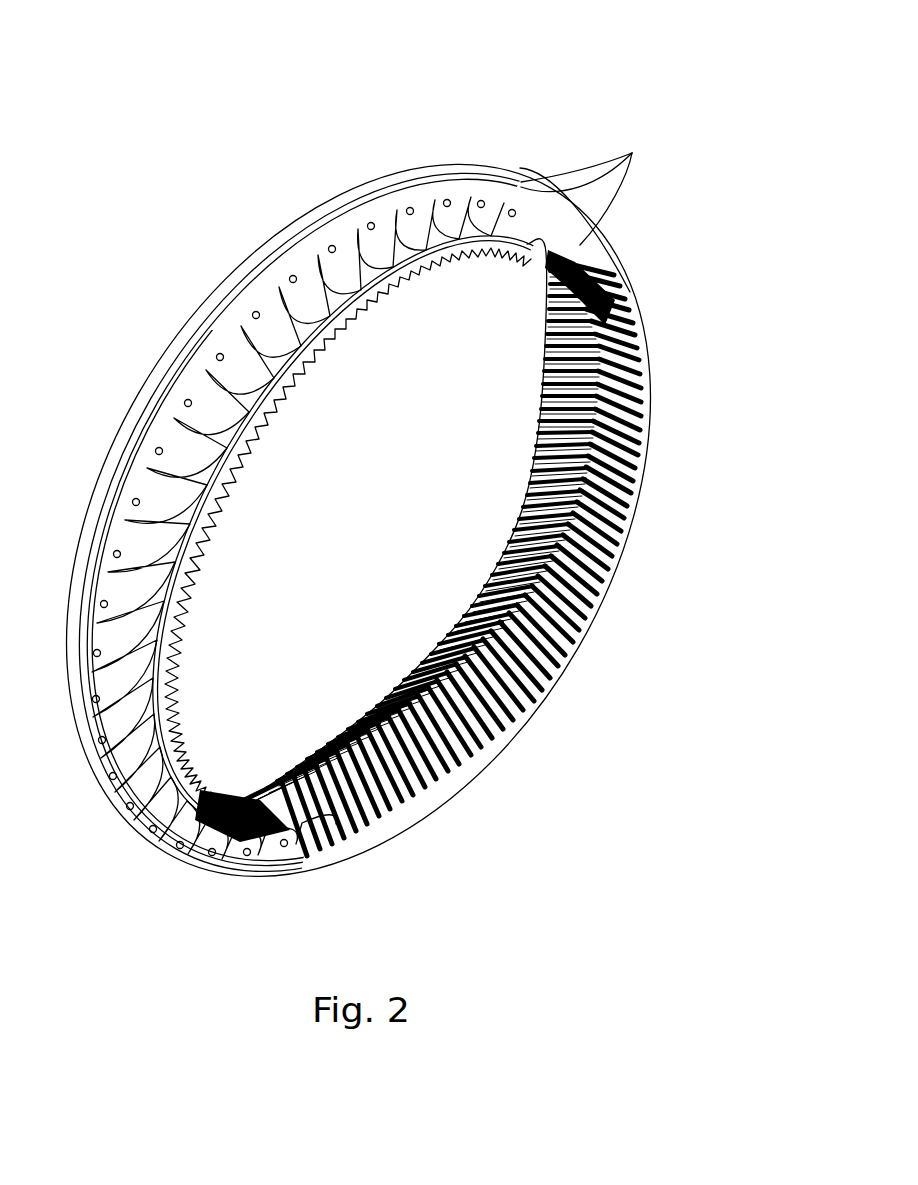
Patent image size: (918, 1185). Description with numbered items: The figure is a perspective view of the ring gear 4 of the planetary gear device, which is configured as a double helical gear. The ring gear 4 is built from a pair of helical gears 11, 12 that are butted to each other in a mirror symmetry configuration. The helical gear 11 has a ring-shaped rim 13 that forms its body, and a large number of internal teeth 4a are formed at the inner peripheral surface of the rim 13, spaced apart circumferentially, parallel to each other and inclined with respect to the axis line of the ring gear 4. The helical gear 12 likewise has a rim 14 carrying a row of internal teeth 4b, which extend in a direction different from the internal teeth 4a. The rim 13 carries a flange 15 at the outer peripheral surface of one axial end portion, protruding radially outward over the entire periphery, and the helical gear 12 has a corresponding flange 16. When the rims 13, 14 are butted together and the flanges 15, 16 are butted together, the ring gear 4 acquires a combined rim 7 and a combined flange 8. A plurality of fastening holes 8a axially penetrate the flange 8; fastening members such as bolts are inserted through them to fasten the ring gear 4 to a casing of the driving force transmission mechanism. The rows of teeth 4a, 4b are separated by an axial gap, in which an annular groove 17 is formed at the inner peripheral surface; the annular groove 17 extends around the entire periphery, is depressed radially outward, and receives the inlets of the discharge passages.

The ring gear 4 is at (412, 480).
The internal teeth 4a is at (528, 463).
The internal teeth 4b is at (641, 460).
The rim 7 is at (385, 520).
The flange 8 is at (559, 146).
The fastening holes 8a is at (589, 205).
The helical gear 11 is at (293, 233).
The helical gear 12 is at (357, 240).
The rim 13 is at (177, 355).
The rim 14 is at (215, 355).
The flange 15 is at (466, 163).
The flange 16 is at (481, 170).
The annular groove 17 is at (593, 600).